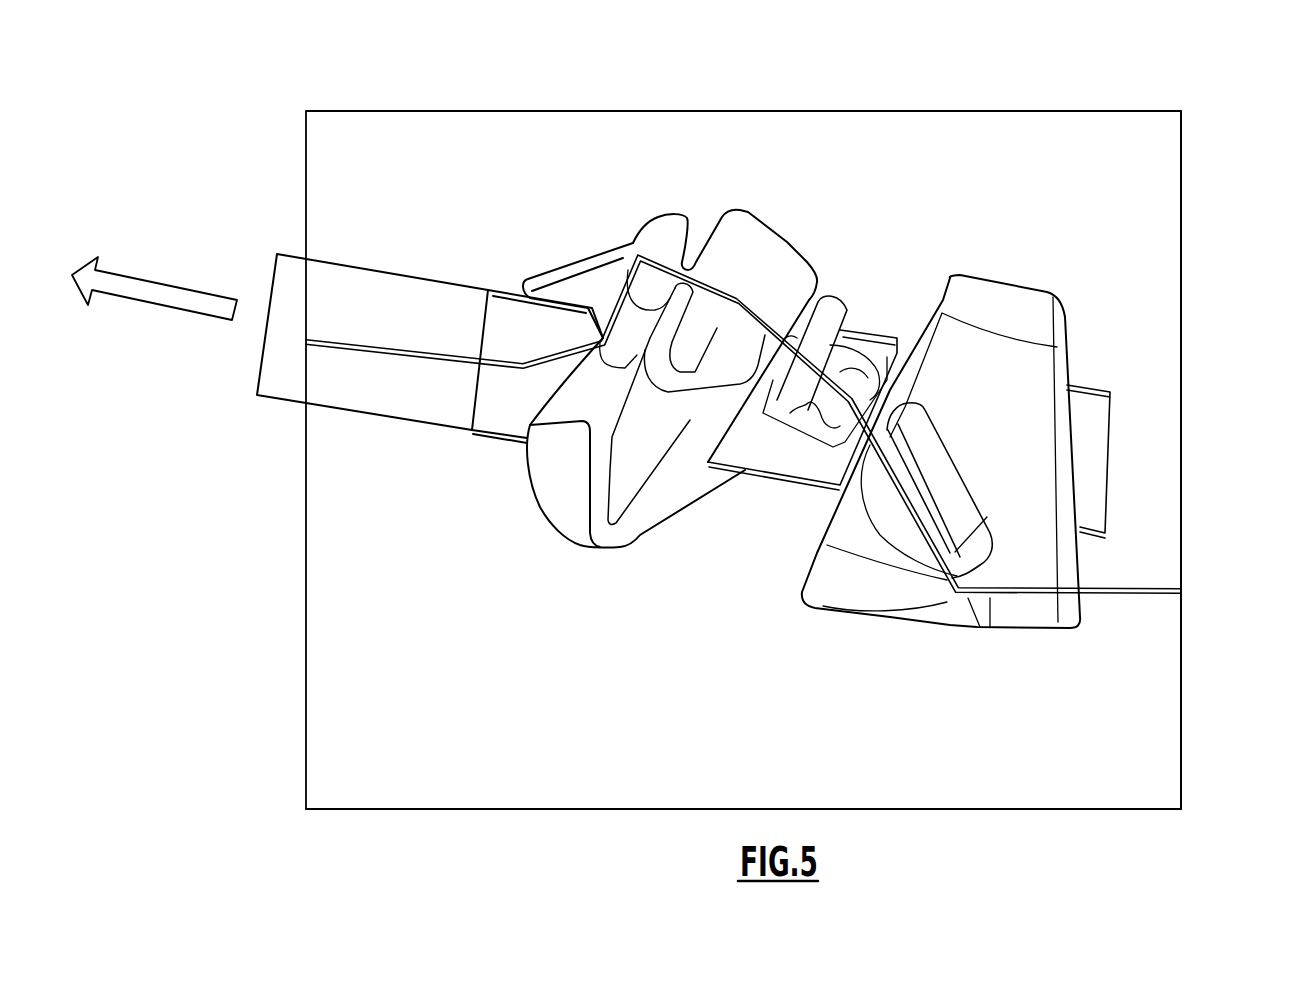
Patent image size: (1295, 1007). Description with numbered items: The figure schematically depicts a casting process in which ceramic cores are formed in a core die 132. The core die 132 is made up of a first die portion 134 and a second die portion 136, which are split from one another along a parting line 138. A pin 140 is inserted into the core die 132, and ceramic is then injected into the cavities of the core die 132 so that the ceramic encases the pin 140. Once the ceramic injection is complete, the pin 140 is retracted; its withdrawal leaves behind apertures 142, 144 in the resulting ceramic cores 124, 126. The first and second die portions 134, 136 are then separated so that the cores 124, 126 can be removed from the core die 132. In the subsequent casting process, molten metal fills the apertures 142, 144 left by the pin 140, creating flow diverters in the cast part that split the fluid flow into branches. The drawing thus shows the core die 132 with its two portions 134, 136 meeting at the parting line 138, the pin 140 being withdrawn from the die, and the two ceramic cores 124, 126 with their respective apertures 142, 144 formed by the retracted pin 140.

The ceramic core 124 is at (770, 213).
The ceramic core 126 is at (1008, 269).
The core die 132 is at (1035, 101).
The first die portion 134 is at (1170, 250).
The second die portion 136 is at (1155, 662).
The parting line 138 is at (1112, 590).
The pin 140 is at (276, 382).
The aperture 142 is at (712, 443).
The aperture 144 is at (885, 353).